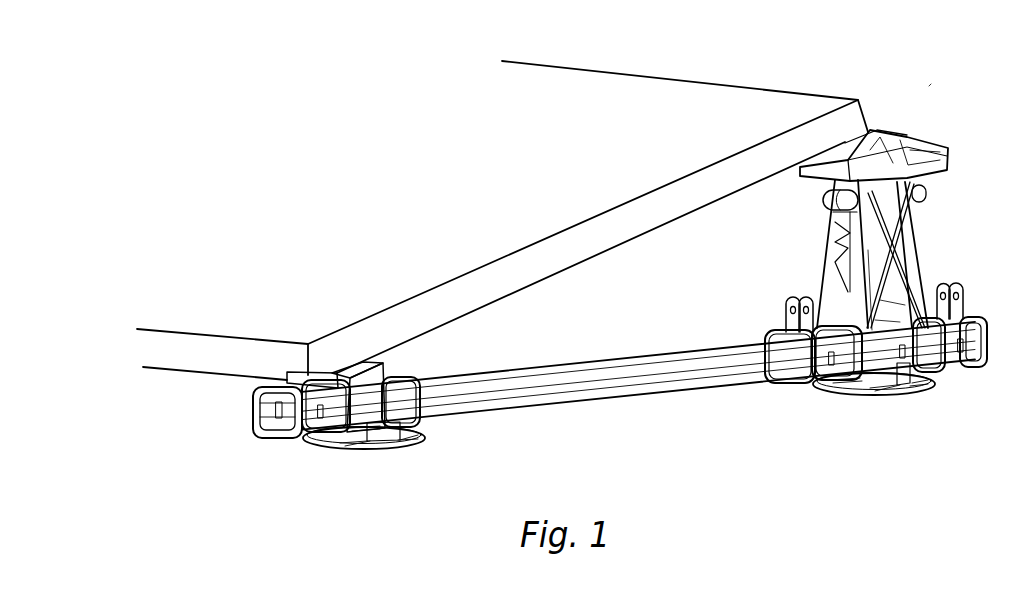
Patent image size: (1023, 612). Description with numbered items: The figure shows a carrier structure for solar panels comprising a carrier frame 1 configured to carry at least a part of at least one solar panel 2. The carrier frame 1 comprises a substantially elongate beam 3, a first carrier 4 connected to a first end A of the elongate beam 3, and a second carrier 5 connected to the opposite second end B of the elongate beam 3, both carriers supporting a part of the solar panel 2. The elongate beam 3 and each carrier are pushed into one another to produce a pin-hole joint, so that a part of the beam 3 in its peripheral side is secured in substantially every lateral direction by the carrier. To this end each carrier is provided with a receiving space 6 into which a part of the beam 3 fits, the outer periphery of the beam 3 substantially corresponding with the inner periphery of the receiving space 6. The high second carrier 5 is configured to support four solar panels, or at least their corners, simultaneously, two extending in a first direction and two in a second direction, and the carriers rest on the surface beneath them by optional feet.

The carrier frame 1 is at (930, 85).
The solar panel 2 is at (591, 239).
The elongate beam 3 is at (607, 382).
The first carrier 4 is at (353, 412).
The second carrier 5 is at (877, 352).
The receiving space 6 is at (283, 422).
The first end A is at (437, 427).
The second end B is at (775, 390).